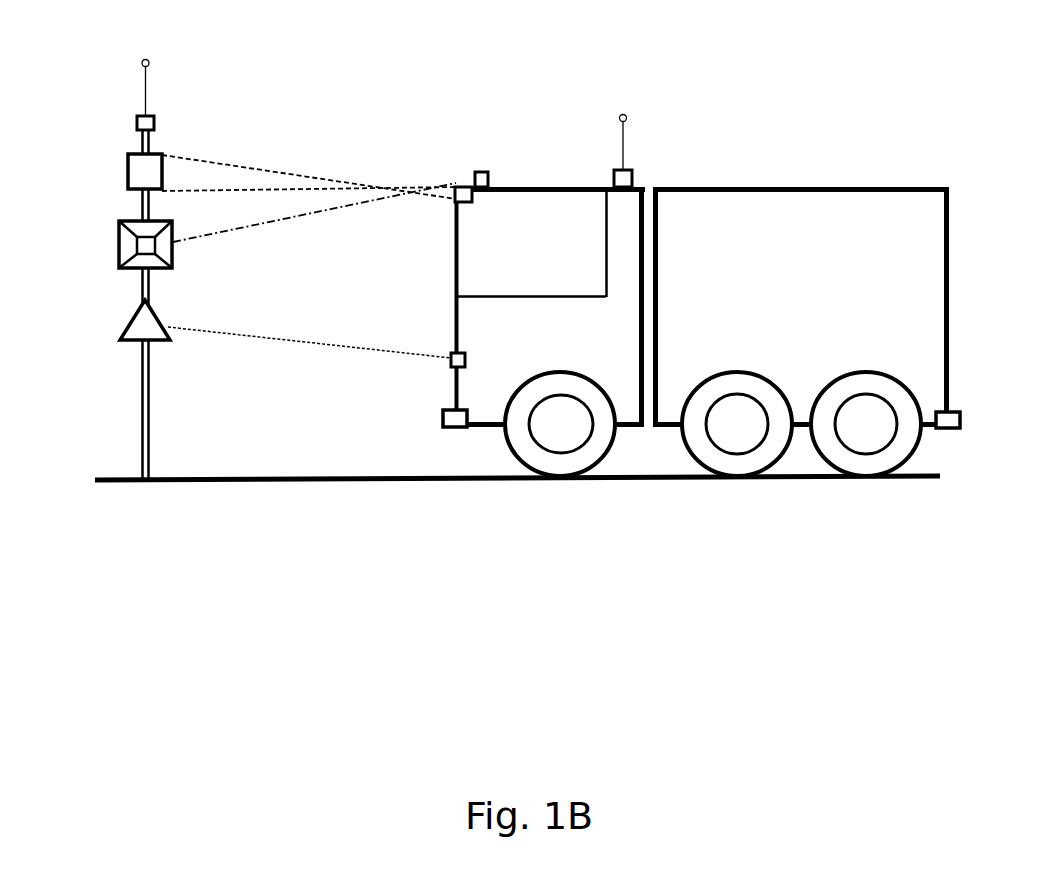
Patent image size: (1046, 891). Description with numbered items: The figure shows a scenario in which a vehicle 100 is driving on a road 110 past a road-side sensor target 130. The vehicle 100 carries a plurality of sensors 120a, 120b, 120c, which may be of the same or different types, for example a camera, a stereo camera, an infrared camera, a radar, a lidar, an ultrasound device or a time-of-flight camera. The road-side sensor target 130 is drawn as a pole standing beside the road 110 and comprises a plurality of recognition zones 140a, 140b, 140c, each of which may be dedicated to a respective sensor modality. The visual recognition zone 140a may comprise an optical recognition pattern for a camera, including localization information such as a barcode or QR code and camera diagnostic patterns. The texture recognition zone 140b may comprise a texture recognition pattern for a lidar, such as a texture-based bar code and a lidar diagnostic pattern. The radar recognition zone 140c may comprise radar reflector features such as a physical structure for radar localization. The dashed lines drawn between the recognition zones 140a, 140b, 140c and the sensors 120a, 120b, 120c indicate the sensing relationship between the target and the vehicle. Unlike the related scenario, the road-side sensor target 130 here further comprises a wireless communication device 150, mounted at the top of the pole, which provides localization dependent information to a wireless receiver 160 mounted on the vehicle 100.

The vehicle 100 is at (818, 302).
The road 110 is at (647, 479).
The sensor 120a is at (457, 187).
The sensor 120b is at (482, 172).
The sensor 120c is at (456, 368).
The road-side sensor target 130 is at (143, 404).
The visual recognition zone 140a is at (145, 168).
The texture recognition zone 140b is at (120, 224).
The radar recognition zone 140c is at (141, 318).
The wireless communication device 150 is at (145, 115).
The wireless receiver 160 is at (628, 165).